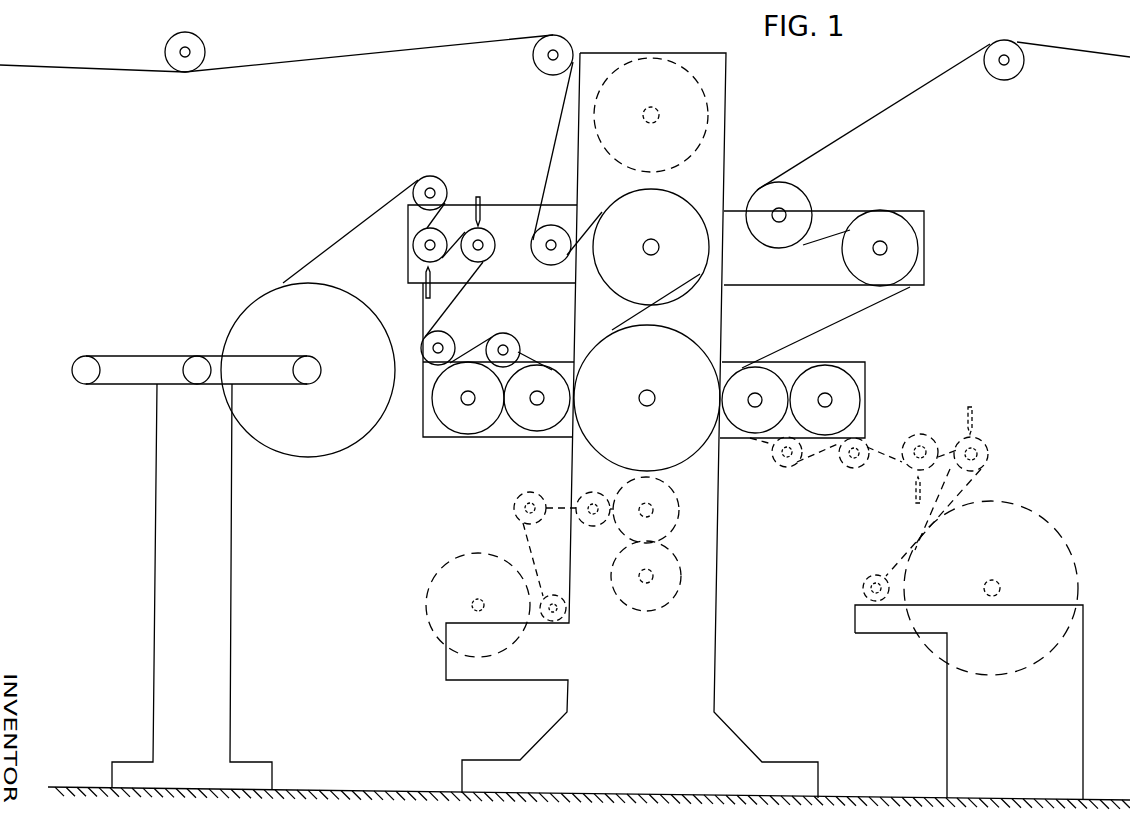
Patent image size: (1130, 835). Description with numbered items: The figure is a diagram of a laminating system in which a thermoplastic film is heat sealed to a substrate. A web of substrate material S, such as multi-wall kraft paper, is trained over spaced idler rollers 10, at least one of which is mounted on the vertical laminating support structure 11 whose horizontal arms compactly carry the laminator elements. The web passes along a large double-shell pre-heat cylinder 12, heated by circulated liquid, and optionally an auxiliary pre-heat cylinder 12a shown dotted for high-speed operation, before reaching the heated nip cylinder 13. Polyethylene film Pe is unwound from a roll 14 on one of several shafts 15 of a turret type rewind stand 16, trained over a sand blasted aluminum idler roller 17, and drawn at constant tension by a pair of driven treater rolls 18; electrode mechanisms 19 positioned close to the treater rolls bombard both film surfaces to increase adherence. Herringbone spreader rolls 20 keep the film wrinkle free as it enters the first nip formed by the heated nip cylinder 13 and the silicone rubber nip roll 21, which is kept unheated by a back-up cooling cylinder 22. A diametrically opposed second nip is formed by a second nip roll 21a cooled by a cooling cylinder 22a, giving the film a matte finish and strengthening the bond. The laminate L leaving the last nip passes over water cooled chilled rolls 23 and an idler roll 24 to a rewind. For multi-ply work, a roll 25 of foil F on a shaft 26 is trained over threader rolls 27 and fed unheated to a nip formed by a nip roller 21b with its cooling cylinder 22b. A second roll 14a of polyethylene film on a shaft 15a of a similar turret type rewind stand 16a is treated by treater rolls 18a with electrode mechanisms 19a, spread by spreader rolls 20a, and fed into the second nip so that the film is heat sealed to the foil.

The substrate web S is at (6, 62).
The polyethylene film Pe is at (337, 238).
The laminate L is at (820, 324).
The foil F is at (522, 541).
The idler rollers 10 is at (206, 47).
The laminating support structure 11 is at (934, 212).
The pre-heat cylinder 12 is at (664, 225).
The auxiliary pre-heat cylinder 12a is at (708, 102).
The heated nip cylinder 13 is at (660, 375).
The roll of polyethylene film 14 is at (318, 335).
The second roll of polyethylene film 14a is at (1045, 521).
The shafts 15 is at (192, 368).
The shaft 15a is at (1000, 570).
The turret type rewind stand 16 is at (205, 513).
The turret type rewind stand 16a is at (1035, 743).
The idler roller 17 is at (421, 182).
The treater rolls 18 is at (469, 233).
The treater rolls 18a is at (990, 452).
The electrode mechanisms 19 is at (480, 199).
The electrode mechanisms 19a is at (977, 413).
The spreader rolls 20 is at (503, 335).
The spreader rolls 20a is at (847, 467).
The nip roll 21 is at (552, 392).
The second nip roll 21a is at (775, 392).
The nip roller 21b is at (677, 512).
The back-up cooling cylinder 22 is at (482, 392).
The back-up cooling cylinder 22a is at (848, 394).
The back-up cooling cylinder 22b is at (644, 607).
The water cooled chilled rolls 23 is at (880, 222).
The idler roll 24 is at (1010, 78).
The roll of foil 25 is at (425, 600).
The shaft 26 is at (485, 581).
The threader rolls 27 is at (577, 495).